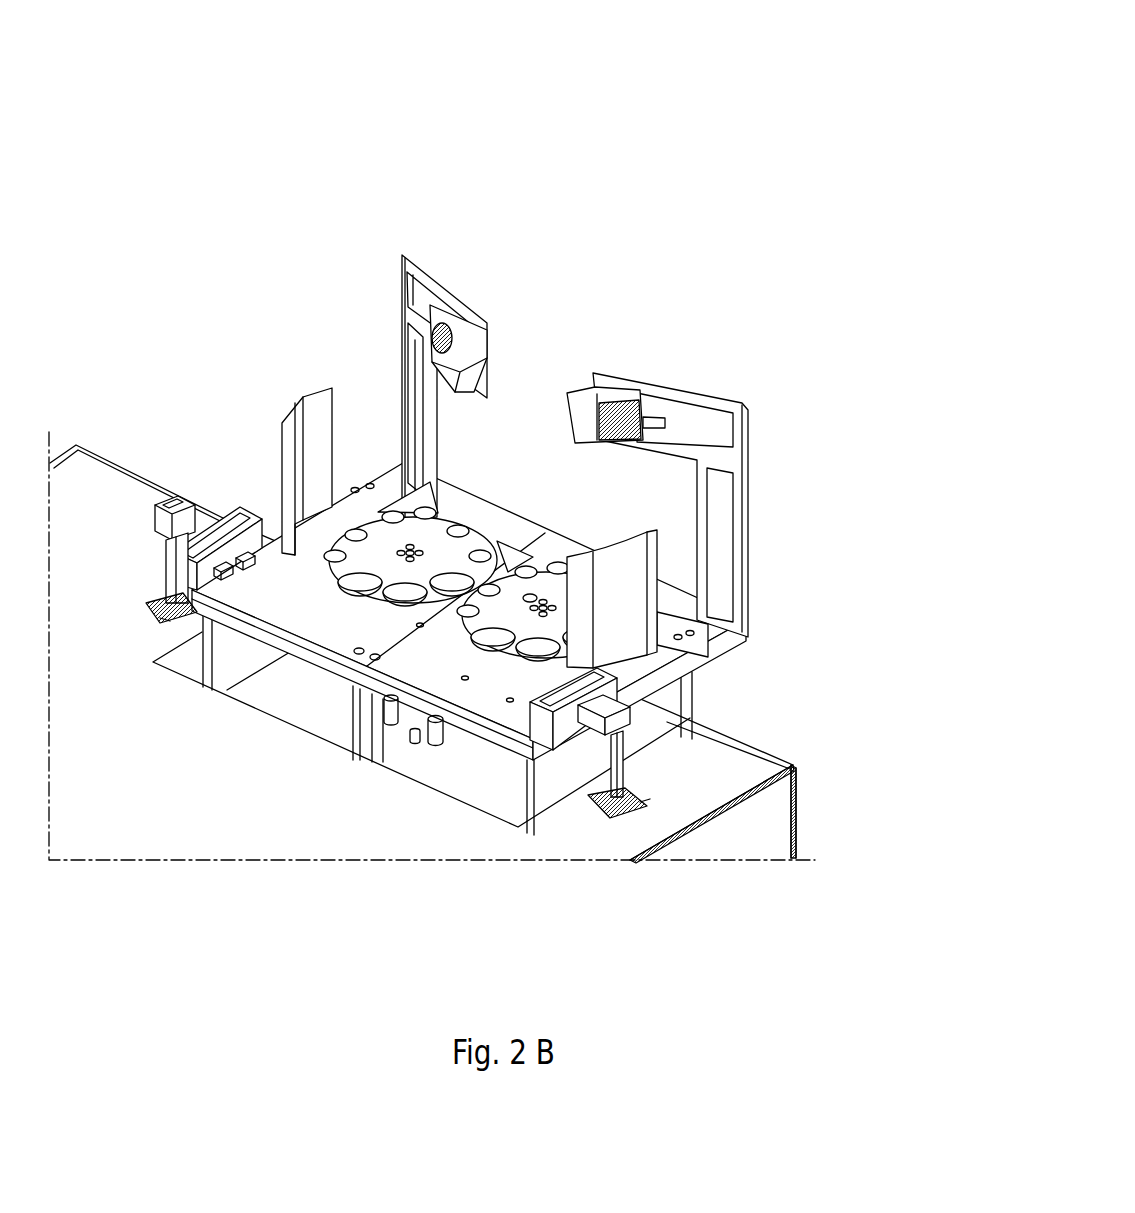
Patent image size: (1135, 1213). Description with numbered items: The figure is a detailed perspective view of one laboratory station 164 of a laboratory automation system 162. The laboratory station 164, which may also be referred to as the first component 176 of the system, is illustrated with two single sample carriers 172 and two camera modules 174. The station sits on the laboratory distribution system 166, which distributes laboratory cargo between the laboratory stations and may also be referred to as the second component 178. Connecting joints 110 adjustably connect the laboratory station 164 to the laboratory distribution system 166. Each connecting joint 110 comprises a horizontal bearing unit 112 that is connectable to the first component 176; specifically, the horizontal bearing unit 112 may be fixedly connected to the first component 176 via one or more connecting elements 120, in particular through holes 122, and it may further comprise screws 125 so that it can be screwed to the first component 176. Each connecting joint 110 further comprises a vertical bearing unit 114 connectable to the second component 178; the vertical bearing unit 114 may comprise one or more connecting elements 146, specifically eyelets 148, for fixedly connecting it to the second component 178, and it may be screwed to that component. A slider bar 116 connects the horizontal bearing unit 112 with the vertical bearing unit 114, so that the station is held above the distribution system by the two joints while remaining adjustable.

The connecting joint 110 is at (421, 673).
The horizontal bearing unit 112 is at (227, 498).
The vertical bearing unit 114 is at (138, 620).
The slider bar 116 is at (165, 566).
The connecting elements 120 is at (441, 584).
The through holes 122 is at (253, 557).
The screws 125 is at (248, 520).
The connecting elements 146 is at (458, 735).
The eyelets 148 is at (167, 618).
The laboratory automation system 162 is at (708, 185).
The laboratory station 164 is at (669, 456).
The laboratory distribution system 166 is at (432, 673).
The single sample carriers 172 is at (450, 526).
The camera modules 174 is at (472, 347).
The first component 176 is at (800, 555).
The second component 178 is at (238, 832).